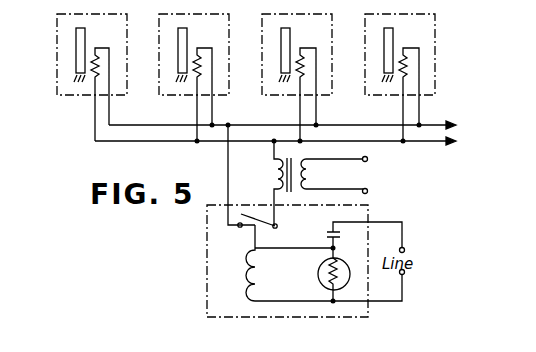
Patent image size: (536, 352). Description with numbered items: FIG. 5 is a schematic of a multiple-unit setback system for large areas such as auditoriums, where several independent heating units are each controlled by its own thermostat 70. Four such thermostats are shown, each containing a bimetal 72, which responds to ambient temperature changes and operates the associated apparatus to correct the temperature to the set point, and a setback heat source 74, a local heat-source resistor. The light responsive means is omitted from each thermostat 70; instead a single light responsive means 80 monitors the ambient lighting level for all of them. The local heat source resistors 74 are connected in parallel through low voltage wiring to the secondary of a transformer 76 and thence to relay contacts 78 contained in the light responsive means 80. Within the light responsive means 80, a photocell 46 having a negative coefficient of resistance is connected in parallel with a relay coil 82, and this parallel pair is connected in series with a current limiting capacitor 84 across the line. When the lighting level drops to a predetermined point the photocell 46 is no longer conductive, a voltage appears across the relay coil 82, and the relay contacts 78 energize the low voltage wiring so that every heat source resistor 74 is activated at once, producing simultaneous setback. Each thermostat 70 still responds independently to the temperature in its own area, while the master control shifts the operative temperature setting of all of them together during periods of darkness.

The thermostat 70 is at (76, 96).
The bimetal 72 is at (76, 37).
The setback heat source 74 is at (98, 48).
The transformer 76 is at (292, 194).
The relay contacts 78 is at (240, 228).
The light responsive means 80 is at (199, 278).
The relay coil 82 is at (247, 286).
The current limiting capacitor 84 is at (327, 234).
The photocell 46 is at (318, 276).